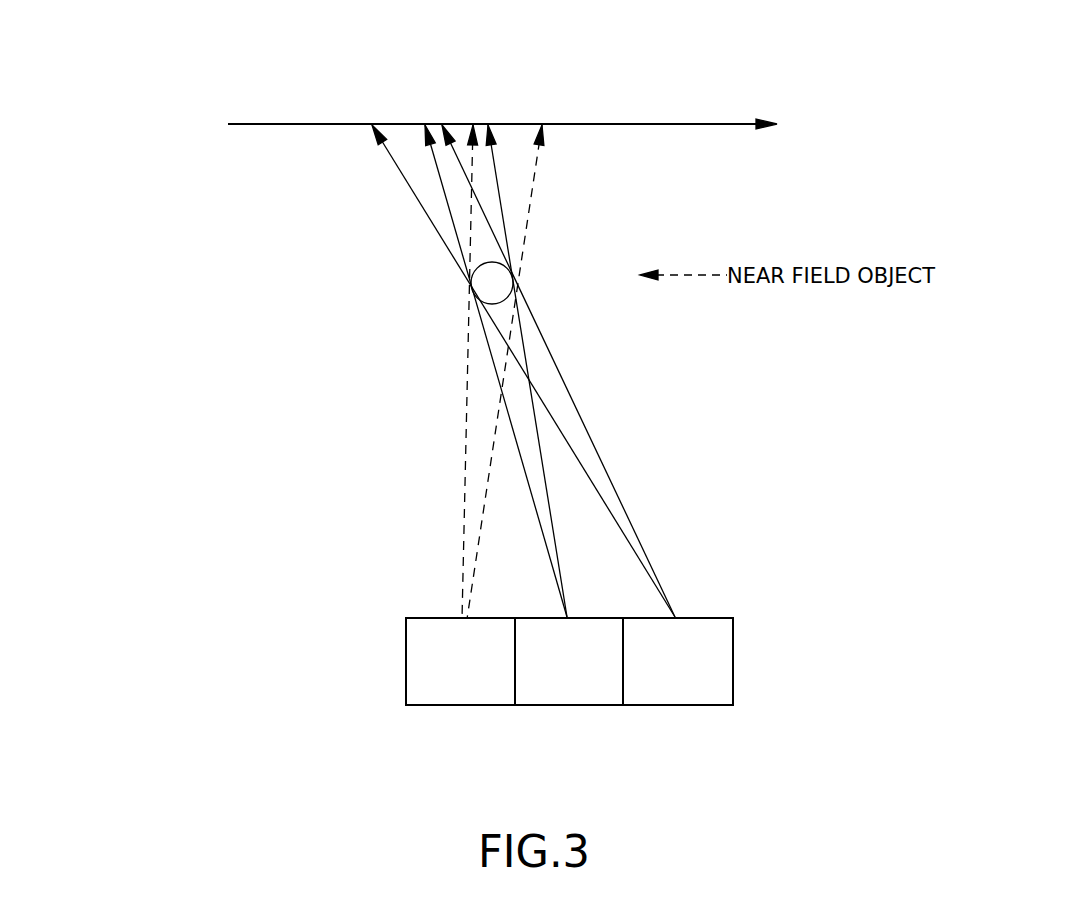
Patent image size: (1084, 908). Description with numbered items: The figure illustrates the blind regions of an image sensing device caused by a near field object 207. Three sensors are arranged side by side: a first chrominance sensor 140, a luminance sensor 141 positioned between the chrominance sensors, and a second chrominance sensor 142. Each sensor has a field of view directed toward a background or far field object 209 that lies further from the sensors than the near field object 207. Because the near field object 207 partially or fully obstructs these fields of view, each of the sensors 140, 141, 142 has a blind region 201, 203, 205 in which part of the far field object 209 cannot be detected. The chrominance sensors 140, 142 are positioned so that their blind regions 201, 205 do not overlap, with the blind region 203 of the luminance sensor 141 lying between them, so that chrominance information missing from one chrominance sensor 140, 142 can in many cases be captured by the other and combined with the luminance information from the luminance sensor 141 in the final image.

The first chrominance sensor 140 is at (406, 660).
The luminance sensor 141 is at (587, 617).
The second chrominance sensor 142 is at (733, 657).
The blind region 201 is at (410, 192).
The blind region 203 is at (432, 165).
The blind region 205 is at (536, 182).
The near field object 207 is at (498, 282).
The far field object 209 is at (645, 122).